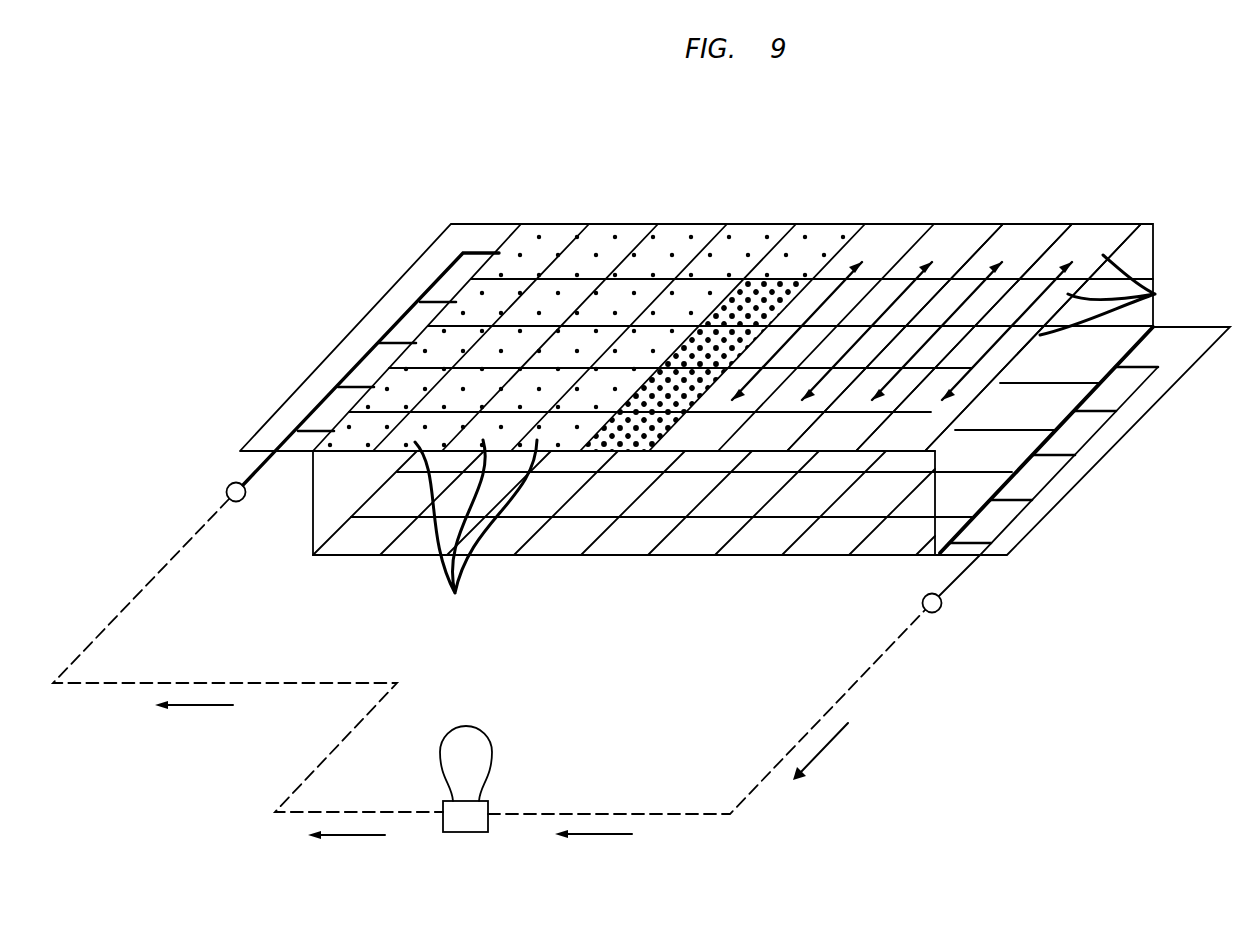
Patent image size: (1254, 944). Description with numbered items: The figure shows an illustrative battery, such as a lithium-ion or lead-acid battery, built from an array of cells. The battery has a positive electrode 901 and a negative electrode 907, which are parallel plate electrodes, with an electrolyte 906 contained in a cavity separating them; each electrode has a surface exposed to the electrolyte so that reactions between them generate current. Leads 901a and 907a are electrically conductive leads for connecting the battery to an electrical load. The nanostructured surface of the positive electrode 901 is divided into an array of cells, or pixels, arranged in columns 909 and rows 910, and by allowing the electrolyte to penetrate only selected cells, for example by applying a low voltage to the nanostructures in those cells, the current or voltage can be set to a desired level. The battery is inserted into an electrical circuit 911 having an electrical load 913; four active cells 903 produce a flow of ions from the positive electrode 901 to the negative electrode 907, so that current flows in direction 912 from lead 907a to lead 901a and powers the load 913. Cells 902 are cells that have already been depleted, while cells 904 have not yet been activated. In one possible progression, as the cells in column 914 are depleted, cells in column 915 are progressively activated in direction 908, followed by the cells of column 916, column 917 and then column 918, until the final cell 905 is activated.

The positive electrode 901 is at (330, 210).
The lead 901a is at (226, 488).
The cells 902 is at (562, 260).
The cells 903 is at (715, 317).
The cells 904 is at (1035, 243).
The final cell 905 is at (1148, 224).
The electrolyte 906 is at (598, 507).
The negative electrode 907 is at (1106, 446).
The lead 907a is at (941, 611).
The direction 908 is at (917, 422).
The columns 909 is at (476, 527).
The rows 910 is at (1126, 295).
The electrical circuit 911 is at (687, 812).
The direction 912 is at (848, 766).
The electrical load 913 is at (458, 832).
The column 914 is at (813, 223).
The column 915 is at (869, 223).
The column 916 is at (942, 223).
The column 917 is at (1014, 223).
The column 918 is at (1089, 223).